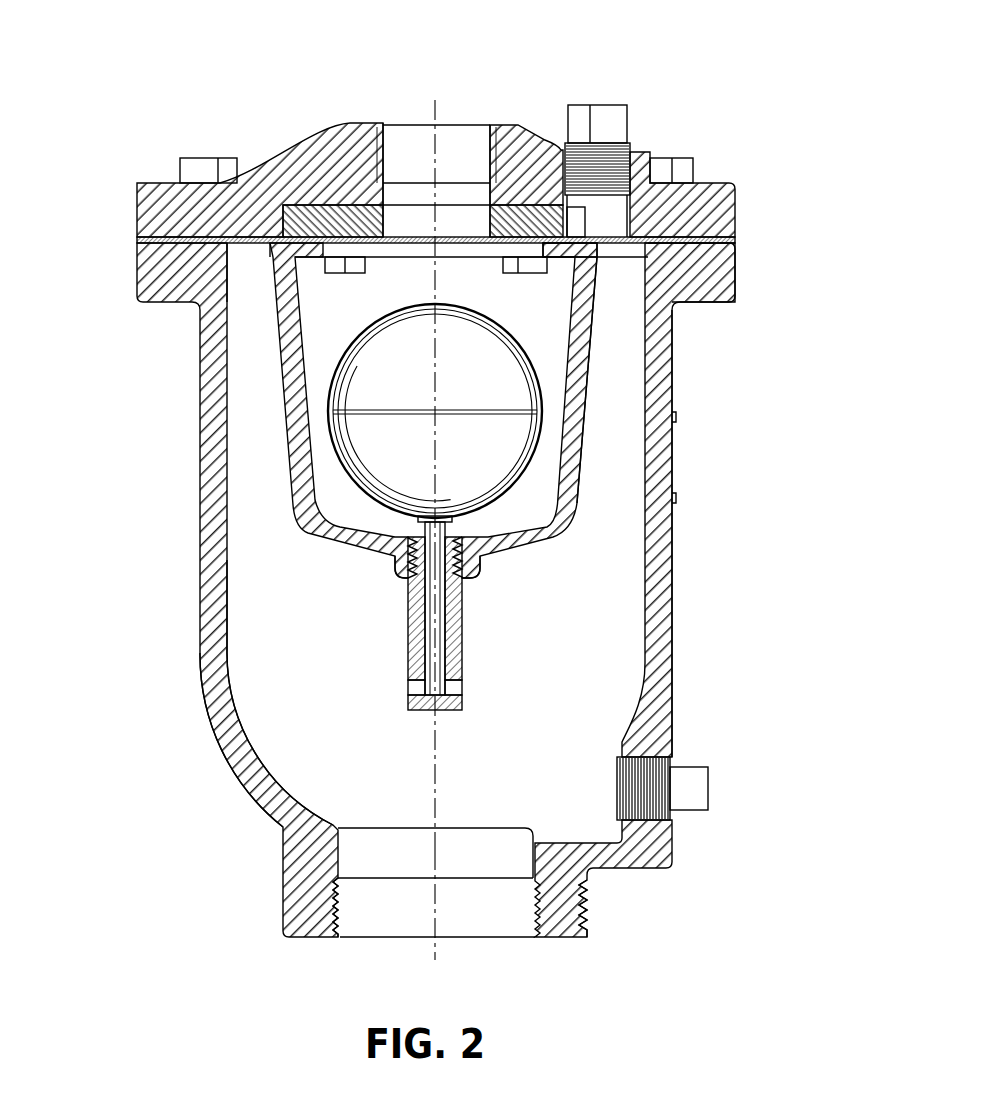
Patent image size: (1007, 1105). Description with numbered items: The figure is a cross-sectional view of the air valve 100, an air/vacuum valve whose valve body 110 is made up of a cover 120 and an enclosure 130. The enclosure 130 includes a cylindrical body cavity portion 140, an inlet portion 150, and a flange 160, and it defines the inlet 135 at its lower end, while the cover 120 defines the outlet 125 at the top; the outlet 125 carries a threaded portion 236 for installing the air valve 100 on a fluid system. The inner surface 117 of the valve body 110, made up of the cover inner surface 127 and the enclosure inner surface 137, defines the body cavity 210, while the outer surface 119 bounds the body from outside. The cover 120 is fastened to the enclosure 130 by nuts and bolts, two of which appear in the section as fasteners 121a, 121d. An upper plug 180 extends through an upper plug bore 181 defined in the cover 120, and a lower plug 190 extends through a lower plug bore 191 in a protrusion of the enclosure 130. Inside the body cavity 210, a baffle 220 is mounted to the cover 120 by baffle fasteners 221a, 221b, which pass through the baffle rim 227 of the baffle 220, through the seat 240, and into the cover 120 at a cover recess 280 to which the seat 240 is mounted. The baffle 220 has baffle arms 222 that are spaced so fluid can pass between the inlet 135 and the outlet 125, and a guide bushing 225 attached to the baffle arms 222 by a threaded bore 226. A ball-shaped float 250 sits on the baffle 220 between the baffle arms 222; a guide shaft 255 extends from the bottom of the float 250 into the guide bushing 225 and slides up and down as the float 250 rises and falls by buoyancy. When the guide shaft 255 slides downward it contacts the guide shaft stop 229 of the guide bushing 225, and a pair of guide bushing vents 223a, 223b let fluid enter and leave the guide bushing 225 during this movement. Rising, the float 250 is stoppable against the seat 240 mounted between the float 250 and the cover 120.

The air valve 100 is at (138, 76).
The valve body 110 is at (678, 845).
The inner surface 117 is at (547, 657).
The outer surface 119 is at (250, 797).
The cover 120 is at (348, 135).
The fastener 121a is at (214, 156).
The fastener 121d is at (687, 170).
The outlet 125 is at (471, 125).
The cover inner surface 127 is at (246, 252).
The enclosure 130 is at (672, 695).
The inlet 135 is at (462, 942).
The enclosure inner surface 137 is at (237, 672).
The body cavity portion 140 is at (198, 555).
The inlet portion 150 is at (579, 900).
The flange 160 is at (720, 270).
The upper plug 180 is at (607, 115).
The upper plug bore 181 is at (628, 168).
The lower plug 190 is at (690, 783).
The lower plug bore 191 is at (648, 750).
The body cavity 210 is at (627, 532).
The baffle 220 is at (595, 377).
The baffle fastener 221a is at (347, 276).
The baffle fastener 221b is at (540, 275).
The baffle arms 222 is at (582, 405).
The guide bushing vent 223a is at (410, 690).
The guide bushing vent 223b is at (460, 693).
The guide bushing 225 is at (460, 613).
The threaded bore 226 is at (505, 552).
The baffle rim 227 is at (570, 250).
The guide shaft stop 229 is at (437, 707).
The threaded portion 236 is at (535, 912).
The seat 240 is at (515, 220).
The float 250 is at (415, 337).
The guide shaft 255 is at (437, 637).
The cover recess 280 is at (283, 223).